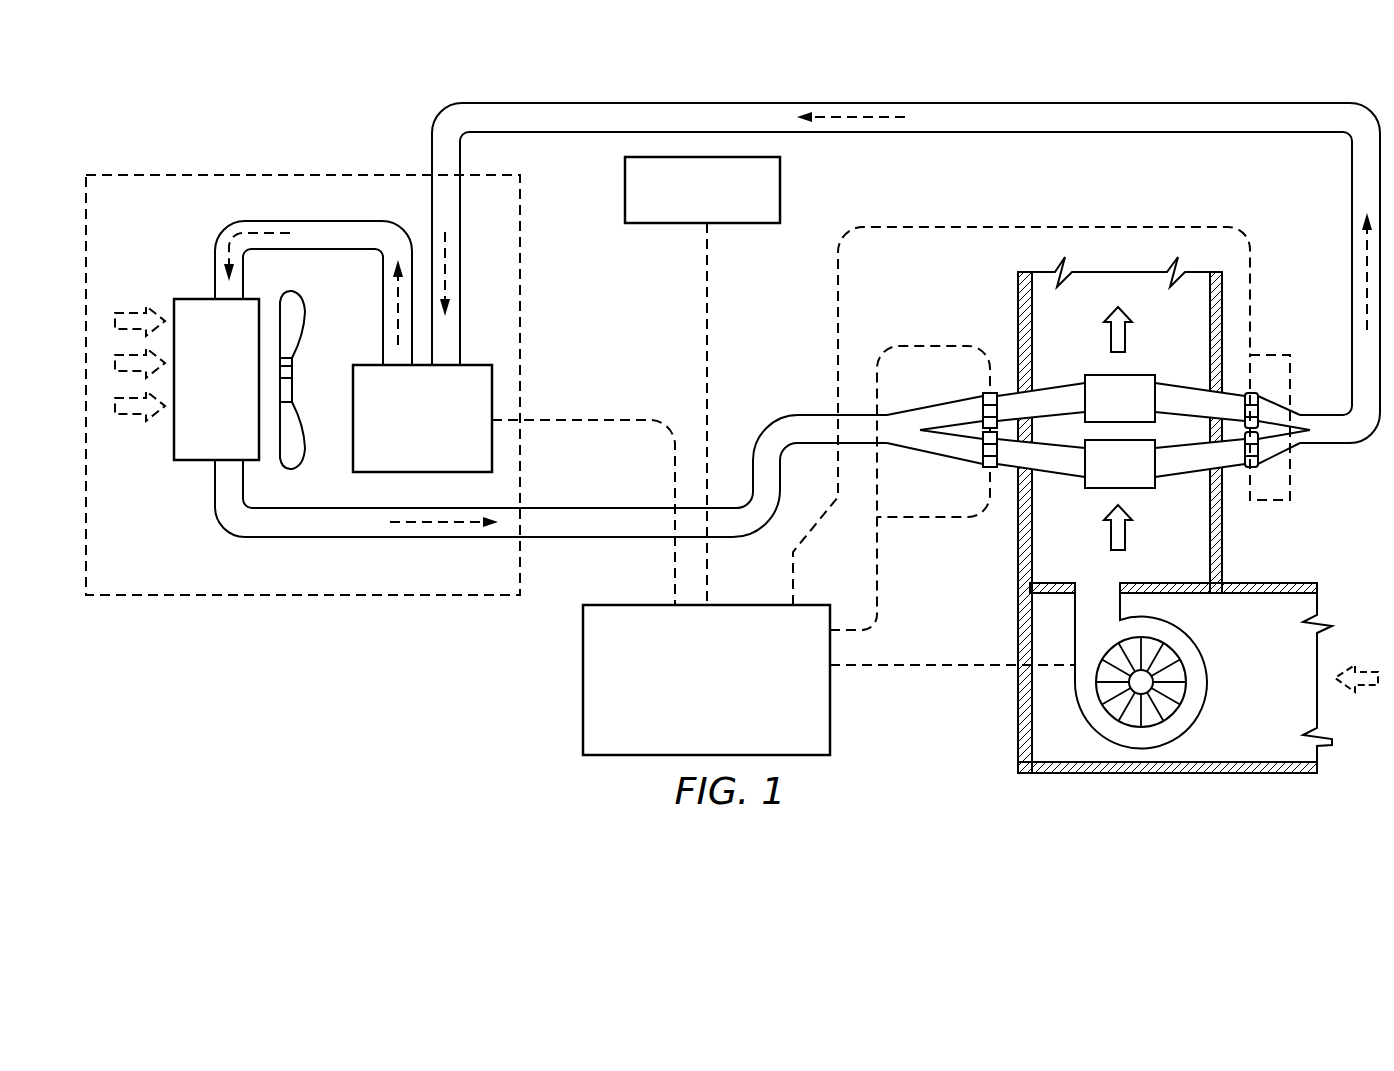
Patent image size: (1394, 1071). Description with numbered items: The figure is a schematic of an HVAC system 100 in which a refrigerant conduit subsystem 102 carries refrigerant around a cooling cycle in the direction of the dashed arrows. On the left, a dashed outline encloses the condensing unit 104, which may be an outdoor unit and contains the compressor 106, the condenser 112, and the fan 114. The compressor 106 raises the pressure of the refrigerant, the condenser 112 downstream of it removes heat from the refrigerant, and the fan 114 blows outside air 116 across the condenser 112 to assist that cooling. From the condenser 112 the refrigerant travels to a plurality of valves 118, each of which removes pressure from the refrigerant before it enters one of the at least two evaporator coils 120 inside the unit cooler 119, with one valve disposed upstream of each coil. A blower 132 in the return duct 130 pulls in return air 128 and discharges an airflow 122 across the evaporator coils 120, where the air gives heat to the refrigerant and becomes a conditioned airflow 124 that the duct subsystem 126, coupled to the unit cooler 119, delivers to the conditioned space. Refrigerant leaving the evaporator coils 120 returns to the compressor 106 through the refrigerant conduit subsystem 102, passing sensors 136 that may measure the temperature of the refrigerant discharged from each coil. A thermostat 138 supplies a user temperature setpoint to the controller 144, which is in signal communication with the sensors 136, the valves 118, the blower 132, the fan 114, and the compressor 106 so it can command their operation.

The HVAC system 100 is at (1178, 43).
The refrigerant conduit subsystem 102 is at (607, 104).
The condensing unit 104 is at (305, 176).
The compressor 106 is at (514, 485).
The condenser 112 is at (172, 442).
The fan 114 is at (300, 310).
The air 116 is at (146, 305).
The plurality of valves 118 is at (985, 395).
The unit cooler 119 is at (1248, 526).
The evaporator coils 120 is at (1098, 431).
The airflow 122 is at (1128, 535).
The conditioned airflow 124 is at (1128, 337).
The duct subsystem 126 is at (1224, 312).
The return air 128 is at (1360, 693).
The return duct 130 is at (1245, 775).
The blower 132 is at (1195, 630).
The plurality of sensors 136 is at (1260, 396).
The thermostat 138 is at (782, 190).
The controller 144 is at (916, 491).